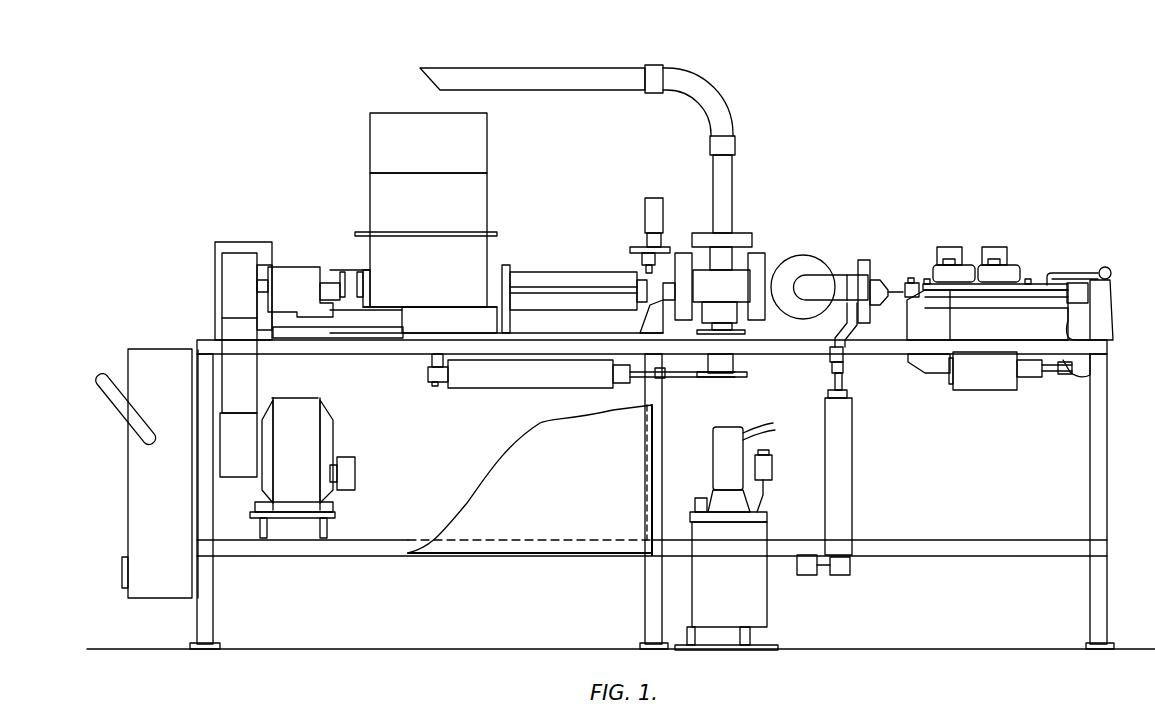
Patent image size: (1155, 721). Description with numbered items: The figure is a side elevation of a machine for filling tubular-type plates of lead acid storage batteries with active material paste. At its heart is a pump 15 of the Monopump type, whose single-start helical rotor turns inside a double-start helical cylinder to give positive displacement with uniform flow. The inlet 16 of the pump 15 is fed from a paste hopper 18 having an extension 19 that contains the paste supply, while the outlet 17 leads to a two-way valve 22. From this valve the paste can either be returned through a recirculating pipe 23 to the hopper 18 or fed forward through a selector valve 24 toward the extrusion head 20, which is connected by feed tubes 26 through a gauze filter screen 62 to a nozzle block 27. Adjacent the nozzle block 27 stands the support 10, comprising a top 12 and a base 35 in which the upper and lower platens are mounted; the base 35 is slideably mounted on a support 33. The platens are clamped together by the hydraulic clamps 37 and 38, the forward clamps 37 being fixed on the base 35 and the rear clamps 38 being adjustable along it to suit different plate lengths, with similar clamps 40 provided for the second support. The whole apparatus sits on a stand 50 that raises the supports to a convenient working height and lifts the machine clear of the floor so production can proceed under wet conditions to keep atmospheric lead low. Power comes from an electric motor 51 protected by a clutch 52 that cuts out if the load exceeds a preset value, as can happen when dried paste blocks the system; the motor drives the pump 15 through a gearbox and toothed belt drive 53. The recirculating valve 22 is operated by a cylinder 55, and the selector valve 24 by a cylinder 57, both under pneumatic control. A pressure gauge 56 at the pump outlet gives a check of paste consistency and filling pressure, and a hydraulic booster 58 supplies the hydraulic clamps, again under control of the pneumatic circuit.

The support 10 is at (970, 298).
The top 12 is at (1028, 280).
The pump 15 is at (552, 280).
The inlet 16 is at (495, 275).
The outlet 17 is at (653, 310).
The paste hopper 18 is at (407, 250).
The extension 19 is at (393, 167).
The extrusion head 20 is at (887, 282).
The two-way valve 22 is at (728, 283).
The recirculating pipe 23 is at (447, 78).
The selector valve 24 is at (840, 267).
The feed tubes 26 is at (890, 296).
The nozzle block 27 is at (907, 281).
The support 33 is at (882, 347).
The base 35 is at (1078, 295).
The hydraulic clamps 37 is at (952, 247).
The hydraulic clamps 38 is at (992, 247).
The hydraulic clamps 40 is at (990, 370).
The stand 50 is at (453, 557).
The electric motor 51 is at (347, 468).
The clutch 52 is at (250, 488).
The gearbox and toothed belt drive 53 is at (247, 297).
The cylinder 55 is at (468, 388).
The pressure gauge 56 is at (650, 210).
The cylinder 57 is at (837, 432).
The hydraulic booster 58 is at (742, 562).
The gauze filter screen 62 is at (808, 254).